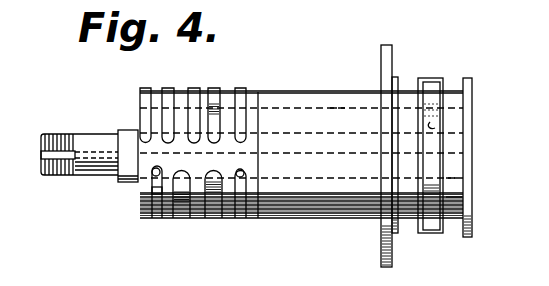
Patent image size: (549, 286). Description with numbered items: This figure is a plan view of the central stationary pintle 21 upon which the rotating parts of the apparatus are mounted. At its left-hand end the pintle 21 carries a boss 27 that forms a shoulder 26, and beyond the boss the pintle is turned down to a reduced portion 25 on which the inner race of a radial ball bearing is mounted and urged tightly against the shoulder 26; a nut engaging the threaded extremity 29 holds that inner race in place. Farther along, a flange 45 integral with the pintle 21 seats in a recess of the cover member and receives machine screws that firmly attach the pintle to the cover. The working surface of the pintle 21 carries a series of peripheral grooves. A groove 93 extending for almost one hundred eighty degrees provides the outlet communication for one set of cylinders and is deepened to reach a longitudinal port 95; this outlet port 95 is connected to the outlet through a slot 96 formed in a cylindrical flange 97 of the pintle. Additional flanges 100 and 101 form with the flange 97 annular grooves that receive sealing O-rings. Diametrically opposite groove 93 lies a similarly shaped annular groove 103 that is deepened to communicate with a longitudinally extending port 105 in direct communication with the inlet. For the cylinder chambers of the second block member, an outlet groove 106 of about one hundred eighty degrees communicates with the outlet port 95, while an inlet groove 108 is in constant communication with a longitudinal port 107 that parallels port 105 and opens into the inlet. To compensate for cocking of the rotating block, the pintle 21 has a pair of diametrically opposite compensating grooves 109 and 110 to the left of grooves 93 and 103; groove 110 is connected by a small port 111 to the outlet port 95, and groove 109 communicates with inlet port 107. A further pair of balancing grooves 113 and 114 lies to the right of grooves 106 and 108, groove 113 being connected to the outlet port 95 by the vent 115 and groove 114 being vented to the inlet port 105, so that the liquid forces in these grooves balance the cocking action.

The pintle 21 is at (301, 92).
The reduced portion 25 is at (80, 138).
The shoulder 26 is at (118, 149).
The boss 27 is at (130, 160).
The threaded extremity 29 is at (51, 137).
The flange 45 is at (393, 50).
The groove 93 is at (167, 197).
The port 95 is at (452, 180).
The slot 96 is at (440, 123).
The cylindrical flange 97 is at (432, 80).
The flange 100 is at (395, 236).
The flange 101 is at (473, 229).
The annular groove 103 is at (191, 96).
The port 105 is at (338, 107).
The groove 106 is at (218, 98).
The port 107 is at (452, 198).
The inlet groove 108 is at (226, 200).
The compensating groove 109 is at (148, 100).
The compensating groove 110 is at (152, 192).
The small port 111 is at (154, 168).
The balancing groove 113 is at (242, 200).
The balancing groove 114 is at (245, 98).
The vent 115 is at (246, 174).